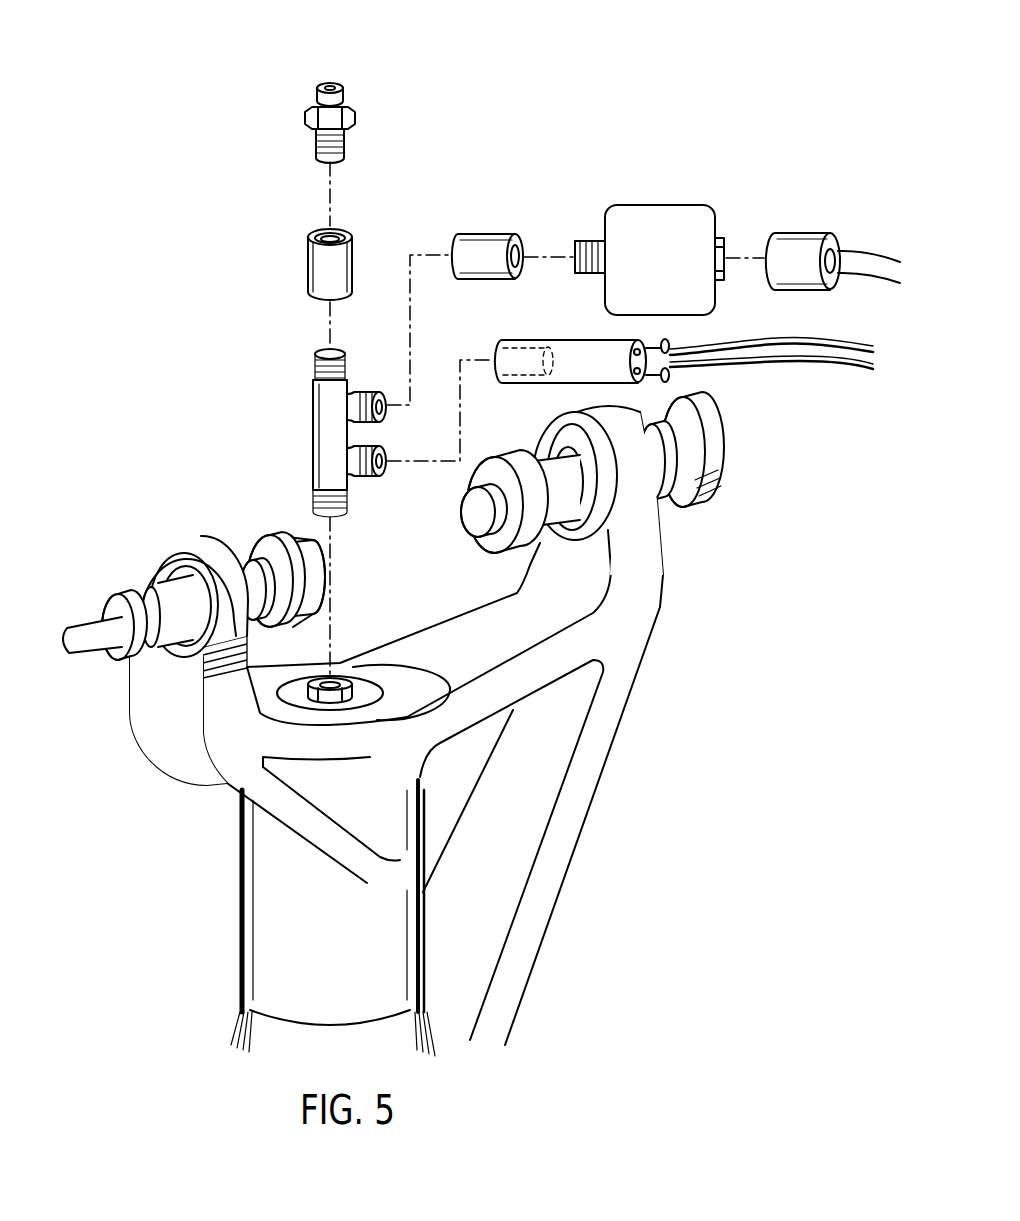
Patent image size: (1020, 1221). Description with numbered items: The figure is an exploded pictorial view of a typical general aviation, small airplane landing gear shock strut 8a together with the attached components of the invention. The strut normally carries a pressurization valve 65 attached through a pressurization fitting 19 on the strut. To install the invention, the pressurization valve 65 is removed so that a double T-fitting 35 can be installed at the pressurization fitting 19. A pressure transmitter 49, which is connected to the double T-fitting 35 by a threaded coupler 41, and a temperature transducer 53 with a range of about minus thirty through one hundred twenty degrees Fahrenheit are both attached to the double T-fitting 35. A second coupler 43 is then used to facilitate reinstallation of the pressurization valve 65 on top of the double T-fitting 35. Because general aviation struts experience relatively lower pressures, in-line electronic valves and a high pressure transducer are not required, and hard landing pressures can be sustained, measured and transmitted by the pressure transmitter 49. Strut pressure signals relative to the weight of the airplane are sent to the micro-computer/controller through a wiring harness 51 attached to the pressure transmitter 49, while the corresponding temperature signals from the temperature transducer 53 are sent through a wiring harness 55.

The pressurization valve 65 is at (325, 80).
The second coupler 43 is at (307, 268).
The double T-fitting 35 is at (309, 417).
The threaded coupler 41 is at (470, 234).
The pressure transmitter 49 is at (667, 205).
The wiring harness 51 is at (863, 250).
The temperature transducer 53 is at (522, 384).
The wiring harness 55 is at (788, 358).
The pressurization fitting 19 is at (353, 682).
The landing gear strut 8a is at (297, 900).